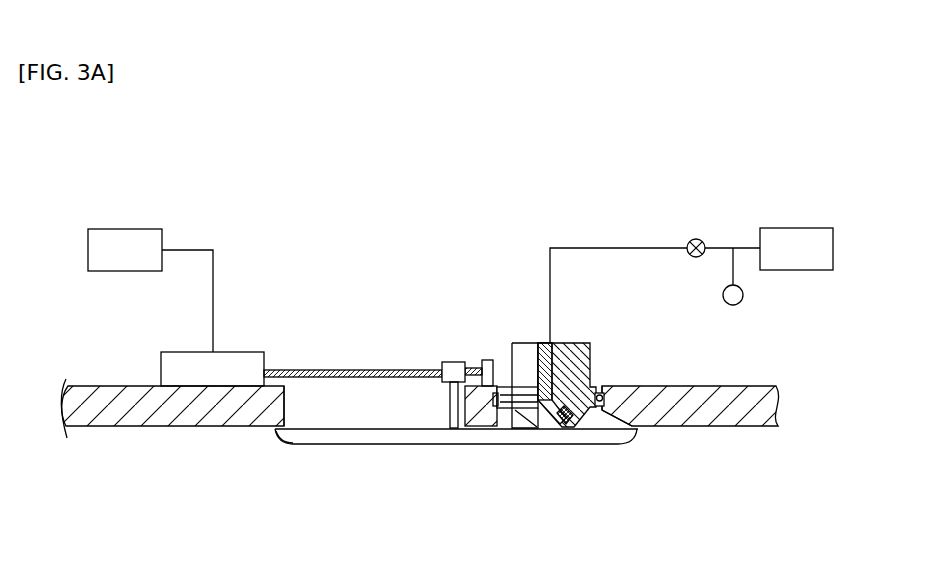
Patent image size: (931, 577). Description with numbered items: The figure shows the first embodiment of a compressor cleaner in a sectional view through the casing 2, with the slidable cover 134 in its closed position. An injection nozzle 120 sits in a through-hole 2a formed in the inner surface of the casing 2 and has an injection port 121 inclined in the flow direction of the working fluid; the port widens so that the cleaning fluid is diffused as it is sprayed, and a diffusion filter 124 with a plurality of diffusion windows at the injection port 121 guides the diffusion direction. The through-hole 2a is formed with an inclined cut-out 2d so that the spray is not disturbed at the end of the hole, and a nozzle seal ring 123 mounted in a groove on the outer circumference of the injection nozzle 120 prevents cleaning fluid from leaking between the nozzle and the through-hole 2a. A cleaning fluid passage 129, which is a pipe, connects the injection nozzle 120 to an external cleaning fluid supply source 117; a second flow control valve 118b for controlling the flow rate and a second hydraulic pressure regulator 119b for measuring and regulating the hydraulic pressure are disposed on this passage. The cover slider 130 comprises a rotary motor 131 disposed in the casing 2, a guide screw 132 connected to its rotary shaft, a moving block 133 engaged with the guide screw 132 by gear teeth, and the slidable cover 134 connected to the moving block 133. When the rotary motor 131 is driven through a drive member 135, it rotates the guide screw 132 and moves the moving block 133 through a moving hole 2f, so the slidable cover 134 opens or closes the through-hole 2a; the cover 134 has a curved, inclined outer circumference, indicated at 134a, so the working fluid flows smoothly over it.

The casing 2 is at (158, 412).
The through-hole 2a is at (592, 418).
The cut-out 2d is at (606, 415).
The moving hole 2f is at (293, 410).
The external cleaning fluid supply source 117 is at (795, 228).
The second flow control valve 118b is at (694, 239).
The second hydraulic pressure regulator 119b is at (743, 295).
The injection nozzle 120 is at (578, 351).
The injection port 121 is at (548, 410).
The nozzle seal ring 123 is at (513, 410).
The diffusion filter 124 is at (565, 426).
The cleaning fluid passage 129 is at (616, 247).
The cover slider 130 is at (308, 310).
The rotary motor 131 is at (236, 352).
The guide screw 132 is at (348, 369).
The moving block 133 is at (455, 362).
The slidable cover 134 is at (370, 437).
The tray bottom 134a is at (282, 442).
The drive member 135 is at (124, 229).